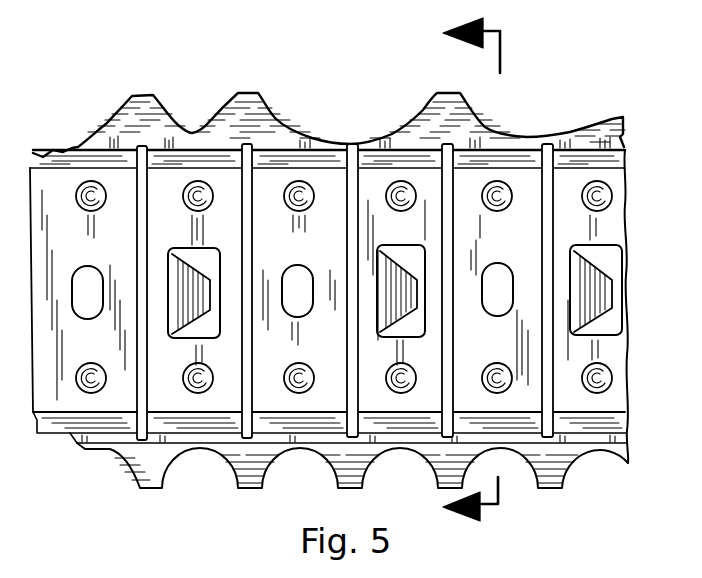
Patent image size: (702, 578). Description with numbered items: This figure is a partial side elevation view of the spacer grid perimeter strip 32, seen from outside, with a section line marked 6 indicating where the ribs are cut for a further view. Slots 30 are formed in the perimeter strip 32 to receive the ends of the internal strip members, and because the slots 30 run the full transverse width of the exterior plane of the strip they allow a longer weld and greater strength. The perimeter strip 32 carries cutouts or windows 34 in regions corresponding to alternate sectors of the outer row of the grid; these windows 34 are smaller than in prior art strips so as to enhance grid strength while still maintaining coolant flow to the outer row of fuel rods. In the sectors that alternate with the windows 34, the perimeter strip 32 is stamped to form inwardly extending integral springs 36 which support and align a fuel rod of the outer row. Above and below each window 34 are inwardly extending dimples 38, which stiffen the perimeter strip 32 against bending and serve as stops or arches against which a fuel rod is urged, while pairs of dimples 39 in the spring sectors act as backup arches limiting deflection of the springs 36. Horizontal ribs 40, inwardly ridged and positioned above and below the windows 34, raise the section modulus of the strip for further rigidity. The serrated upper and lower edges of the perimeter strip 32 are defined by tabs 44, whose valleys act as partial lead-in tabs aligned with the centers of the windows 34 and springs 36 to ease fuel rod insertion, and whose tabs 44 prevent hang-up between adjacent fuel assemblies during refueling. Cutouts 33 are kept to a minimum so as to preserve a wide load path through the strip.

The slot 30 is at (347, 252).
The perimeter strip 32 is at (618, 177).
The cutout 33 is at (413, 256).
The window 34 is at (82, 280).
The integral spring 36 is at (196, 286).
The dimple 38 is at (298, 195).
The dimple 39 is at (197, 200).
The horizontal rib 40 is at (505, 160).
The tab 44 is at (252, 477).
The section line 6- 6 is at (457, 272).